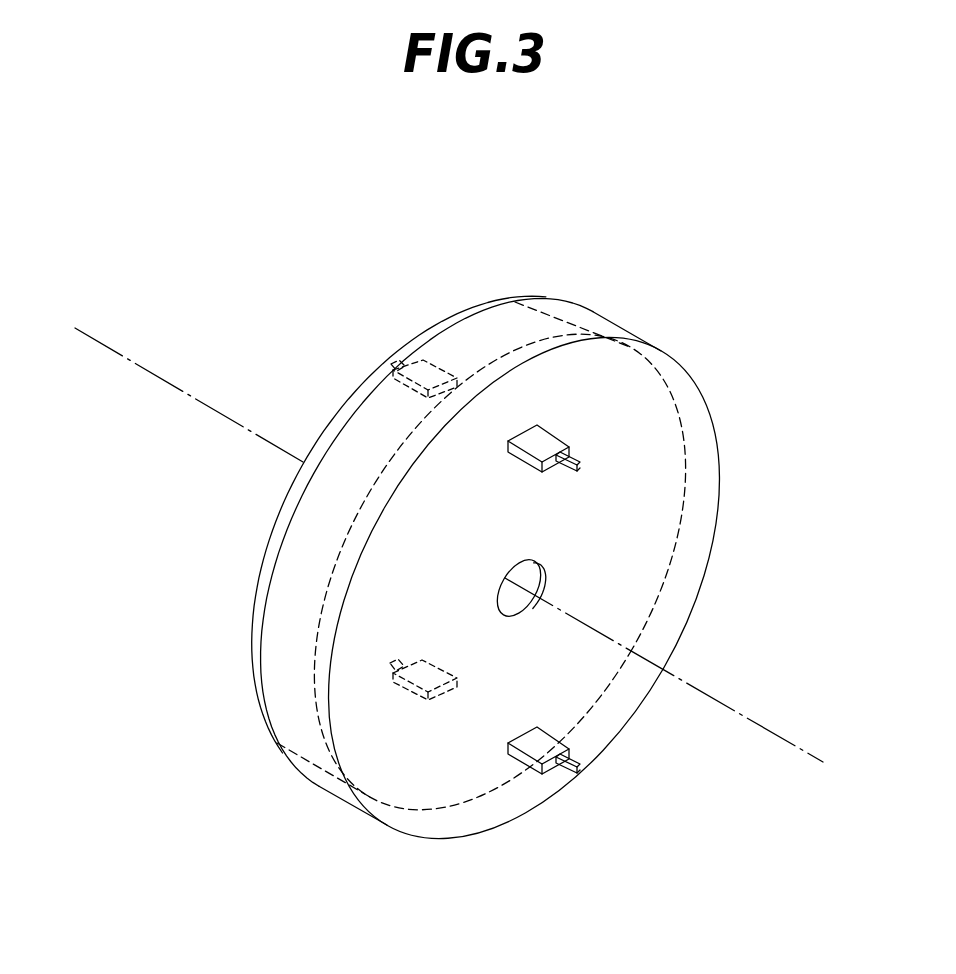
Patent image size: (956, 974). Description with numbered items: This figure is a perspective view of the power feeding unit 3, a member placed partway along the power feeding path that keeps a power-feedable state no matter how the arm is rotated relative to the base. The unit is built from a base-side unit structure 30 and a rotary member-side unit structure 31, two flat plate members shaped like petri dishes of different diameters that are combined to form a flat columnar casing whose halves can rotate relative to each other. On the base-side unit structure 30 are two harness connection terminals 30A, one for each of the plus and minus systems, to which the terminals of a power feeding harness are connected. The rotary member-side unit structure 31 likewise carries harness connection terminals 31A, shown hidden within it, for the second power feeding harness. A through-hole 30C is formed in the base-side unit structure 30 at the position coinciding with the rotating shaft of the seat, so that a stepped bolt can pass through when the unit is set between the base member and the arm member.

The power feeding unit 3 is at (628, 227).
The base-side unit structure 30 is at (643, 417).
The harness connection terminal 30A is at (569, 446).
The through-hole 30C is at (545, 574).
The rotary member-side unit structure 31 is at (436, 326).
The harness connection terminal 31A is at (400, 396).